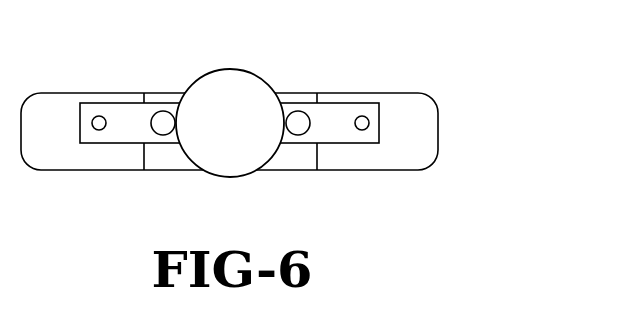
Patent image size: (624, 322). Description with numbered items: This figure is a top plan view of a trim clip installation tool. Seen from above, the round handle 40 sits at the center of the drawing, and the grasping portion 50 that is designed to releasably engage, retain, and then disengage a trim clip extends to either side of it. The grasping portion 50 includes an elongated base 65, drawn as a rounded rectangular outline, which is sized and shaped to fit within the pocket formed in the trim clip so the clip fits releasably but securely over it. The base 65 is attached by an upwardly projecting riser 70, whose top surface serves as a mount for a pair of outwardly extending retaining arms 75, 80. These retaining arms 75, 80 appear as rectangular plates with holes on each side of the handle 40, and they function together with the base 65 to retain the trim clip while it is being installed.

The handle 40 is at (253, 98).
The grasping portion 50 is at (291, 145).
The base 65 is at (422, 123).
The riser 70 is at (293, 161).
The retaining arm 75 is at (130, 118).
The retaining arm 80 is at (336, 120).